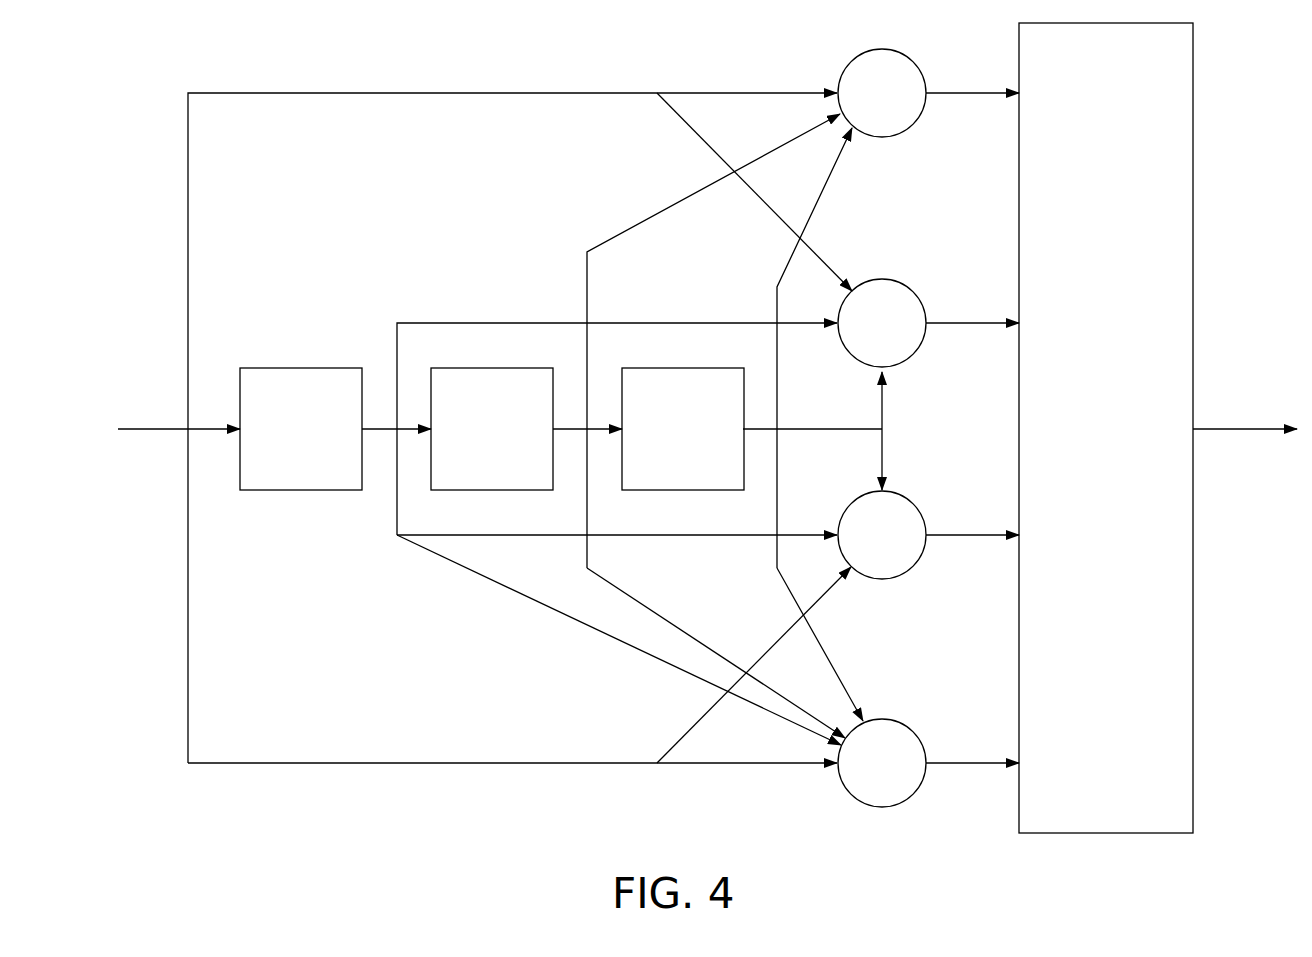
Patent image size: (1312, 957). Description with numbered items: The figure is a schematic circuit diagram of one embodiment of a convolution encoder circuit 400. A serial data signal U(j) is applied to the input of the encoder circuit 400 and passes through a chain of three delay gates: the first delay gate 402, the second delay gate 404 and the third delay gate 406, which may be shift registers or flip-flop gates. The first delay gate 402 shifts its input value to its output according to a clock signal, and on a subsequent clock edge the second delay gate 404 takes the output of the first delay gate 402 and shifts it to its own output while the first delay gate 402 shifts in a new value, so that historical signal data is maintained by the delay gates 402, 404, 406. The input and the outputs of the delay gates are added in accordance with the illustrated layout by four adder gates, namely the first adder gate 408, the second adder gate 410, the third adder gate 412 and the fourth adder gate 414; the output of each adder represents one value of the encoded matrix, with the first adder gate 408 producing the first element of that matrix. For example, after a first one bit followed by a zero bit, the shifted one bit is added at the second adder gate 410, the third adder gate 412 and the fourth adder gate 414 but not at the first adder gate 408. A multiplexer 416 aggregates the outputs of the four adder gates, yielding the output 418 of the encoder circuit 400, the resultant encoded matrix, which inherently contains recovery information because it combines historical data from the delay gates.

The encoder circuit 400 is at (163, 83).
The first delay gate 402 is at (281, 454).
The second delay gate 404 is at (472, 454).
The third delay gate 406 is at (663, 454).
The first adder gate 408 is at (862, 118).
The second adder gate 410 is at (862, 348).
The third adder gate 412 is at (862, 560).
The fourth adder gate 414 is at (862, 788).
The multiplexer 416 is at (1088, 456).
The output 418 is at (1213, 431).